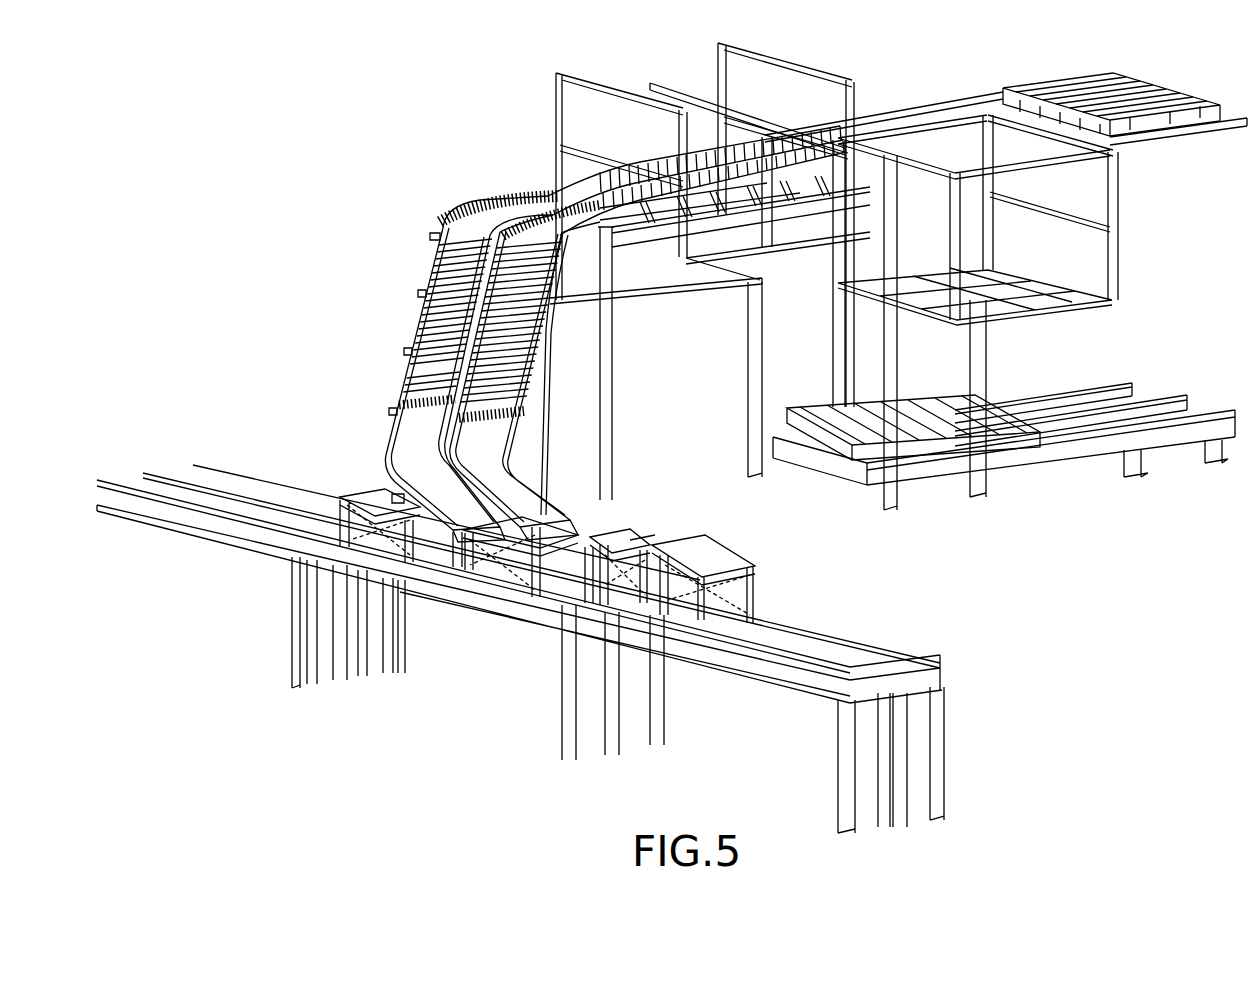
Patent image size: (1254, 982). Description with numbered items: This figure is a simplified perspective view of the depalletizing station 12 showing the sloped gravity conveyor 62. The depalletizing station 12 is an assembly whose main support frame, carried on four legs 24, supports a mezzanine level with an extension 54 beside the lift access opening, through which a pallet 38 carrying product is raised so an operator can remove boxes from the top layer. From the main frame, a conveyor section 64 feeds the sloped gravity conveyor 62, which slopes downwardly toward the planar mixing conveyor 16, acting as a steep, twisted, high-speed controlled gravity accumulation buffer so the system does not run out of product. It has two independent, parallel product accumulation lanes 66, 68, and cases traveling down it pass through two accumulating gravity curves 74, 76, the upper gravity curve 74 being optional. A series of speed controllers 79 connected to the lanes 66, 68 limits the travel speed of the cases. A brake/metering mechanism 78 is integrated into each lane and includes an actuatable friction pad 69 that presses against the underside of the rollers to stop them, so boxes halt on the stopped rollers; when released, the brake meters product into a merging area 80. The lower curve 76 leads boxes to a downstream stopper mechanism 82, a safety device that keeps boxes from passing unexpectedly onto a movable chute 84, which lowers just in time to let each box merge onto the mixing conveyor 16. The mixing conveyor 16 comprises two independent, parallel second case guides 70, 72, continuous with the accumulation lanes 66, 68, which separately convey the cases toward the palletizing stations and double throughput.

The depalletizing station 12 is at (443, 80).
The mixing conveyor 16 is at (967, 648).
The legs 24 is at (750, 358).
The pallet 38 is at (1143, 90).
The extension 54 is at (1070, 310).
The sloped gravity conveyor 62 is at (401, 268).
The upper conveyor 64 is at (548, 193).
The product accumulation lane 66 is at (547, 345).
The product accumulation lane 68 is at (437, 338).
The actuatable friction pad 69 is at (420, 410).
The second case guide 70 is at (877, 652).
The second case guide 72 is at (767, 660).
The upper gravity curve 74 is at (487, 225).
The gravity curve 76 is at (383, 460).
The brake/metering mechanism 78 is at (407, 371).
The speed controllers 79 is at (433, 237).
The merging area 80 is at (645, 477).
The downstream stopper mechanism 82 is at (568, 513).
The movable chute 84 is at (615, 543).